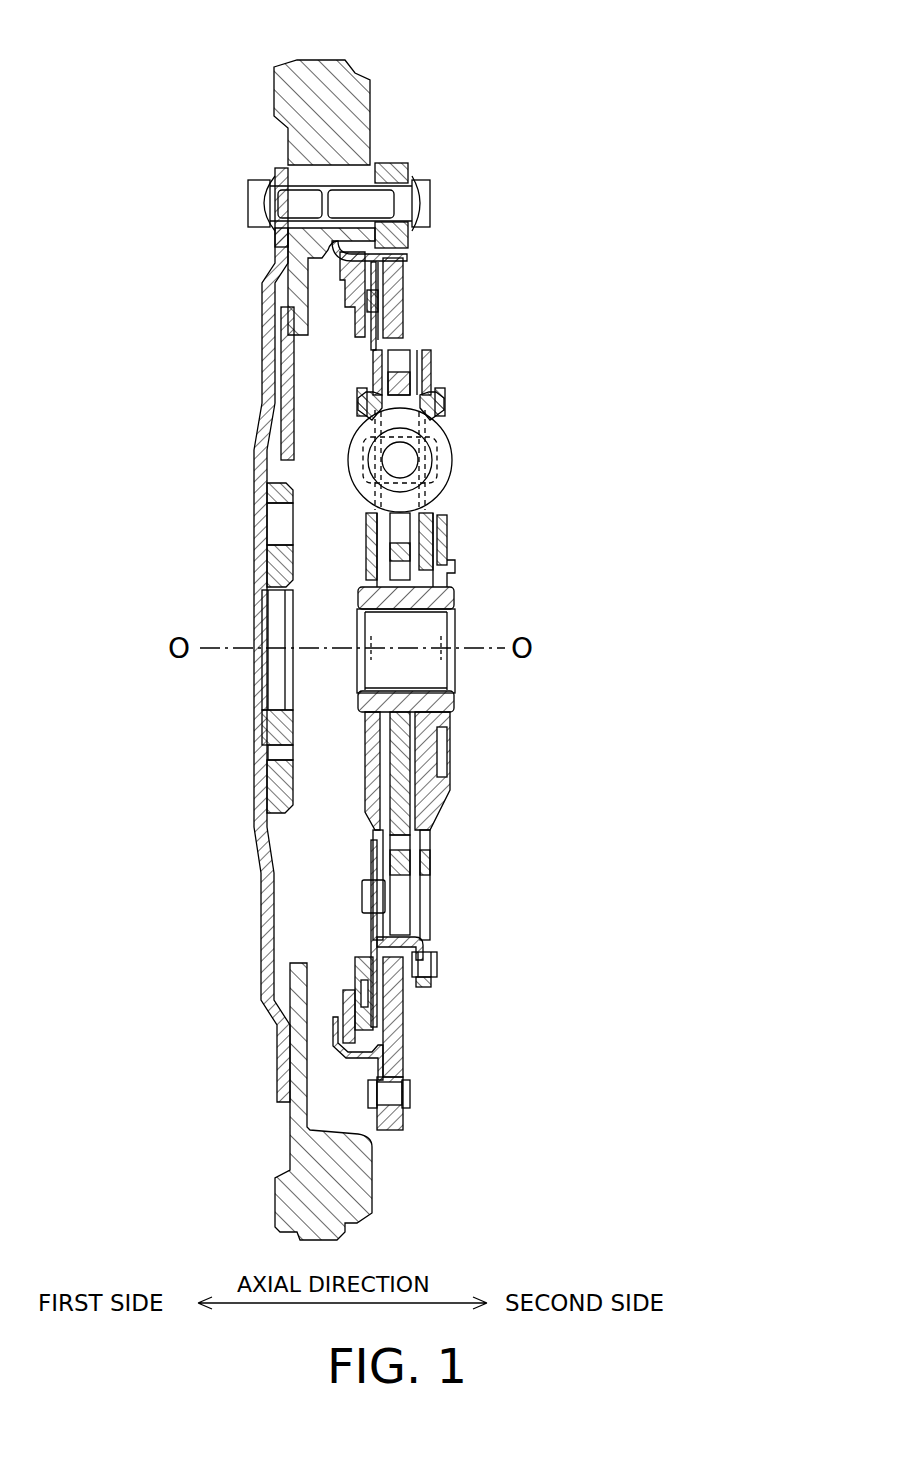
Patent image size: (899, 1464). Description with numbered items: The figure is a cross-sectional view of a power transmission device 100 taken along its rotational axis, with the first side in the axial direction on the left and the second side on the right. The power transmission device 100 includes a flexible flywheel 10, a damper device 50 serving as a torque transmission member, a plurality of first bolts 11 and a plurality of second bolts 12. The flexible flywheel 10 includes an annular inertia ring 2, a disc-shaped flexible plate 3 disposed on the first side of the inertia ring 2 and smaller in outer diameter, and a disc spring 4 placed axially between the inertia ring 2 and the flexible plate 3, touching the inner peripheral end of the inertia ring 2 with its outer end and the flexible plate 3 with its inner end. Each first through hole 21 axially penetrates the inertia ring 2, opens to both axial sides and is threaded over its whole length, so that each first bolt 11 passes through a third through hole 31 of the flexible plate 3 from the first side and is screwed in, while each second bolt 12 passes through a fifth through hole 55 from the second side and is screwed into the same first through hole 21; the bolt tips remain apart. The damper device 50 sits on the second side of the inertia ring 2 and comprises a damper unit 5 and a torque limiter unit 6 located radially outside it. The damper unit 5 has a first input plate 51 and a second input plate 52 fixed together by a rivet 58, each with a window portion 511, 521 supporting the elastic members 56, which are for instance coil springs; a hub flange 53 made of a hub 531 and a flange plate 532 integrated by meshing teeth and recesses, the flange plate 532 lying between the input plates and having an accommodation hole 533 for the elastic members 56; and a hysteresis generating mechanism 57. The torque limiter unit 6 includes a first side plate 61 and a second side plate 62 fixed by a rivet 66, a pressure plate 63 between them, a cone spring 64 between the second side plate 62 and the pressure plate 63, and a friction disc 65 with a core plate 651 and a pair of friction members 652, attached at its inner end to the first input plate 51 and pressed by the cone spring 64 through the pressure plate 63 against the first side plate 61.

The power transmission device 100 is at (617, 92).
The flexible flywheel 10 is at (366, 53).
The inertia ring 2 is at (283, 88).
The flexible plate 3 is at (265, 325).
The disc spring 4 is at (287, 392).
The first bolt 11 is at (258, 202).
The second bolt 12 is at (424, 198).
The first through hole 21 is at (405, 172).
The third through hole 31 is at (283, 192).
The fifth through hole 55 is at (392, 212).
The torque limiter unit 6 is at (430, 272).
The damper device 50 is at (513, 337).
The damper unit 5 is at (463, 376).
The first input plate 51 is at (423, 821).
The second input plate 52 is at (450, 788).
The hub flange 53 is at (466, 582).
The hub 531 is at (457, 598).
The flange plate 532 is at (408, 357).
The accommodation hole 533 is at (437, 392).
The window portion 511 is at (443, 389).
The window portion 521 is at (443, 413).
The elastic member 56 is at (455, 462).
The hysteresis generating mechanism 57 is at (450, 518).
The rivet 58 is at (433, 962).
The first side plate 61 is at (400, 1060).
The second side plate 62 is at (375, 1063).
The pressure plate 63 is at (357, 972).
The cone spring 64 is at (340, 1012).
The friction disc 65 is at (367, 938).
The core plate 651 is at (370, 946).
The friction member 652 is at (380, 1022).
The rivet 66 is at (410, 1090).